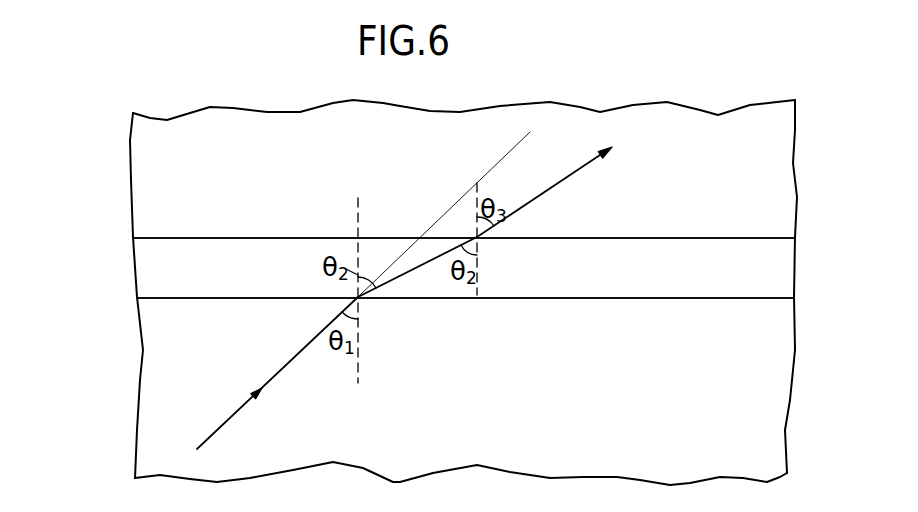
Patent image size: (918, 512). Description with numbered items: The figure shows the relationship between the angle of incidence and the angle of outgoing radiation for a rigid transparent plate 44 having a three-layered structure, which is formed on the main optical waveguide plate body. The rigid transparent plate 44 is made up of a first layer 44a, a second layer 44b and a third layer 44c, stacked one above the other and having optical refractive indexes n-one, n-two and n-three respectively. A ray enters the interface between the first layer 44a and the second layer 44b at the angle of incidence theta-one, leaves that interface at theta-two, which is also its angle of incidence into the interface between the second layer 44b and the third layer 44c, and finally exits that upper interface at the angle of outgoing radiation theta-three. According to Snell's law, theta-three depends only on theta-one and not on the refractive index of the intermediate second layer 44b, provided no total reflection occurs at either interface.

The rigid transparent plate 44 is at (721, 109).
The first layer 44a is at (172, 365).
The second layer 44b is at (155, 268).
The third layer 44c is at (160, 177).